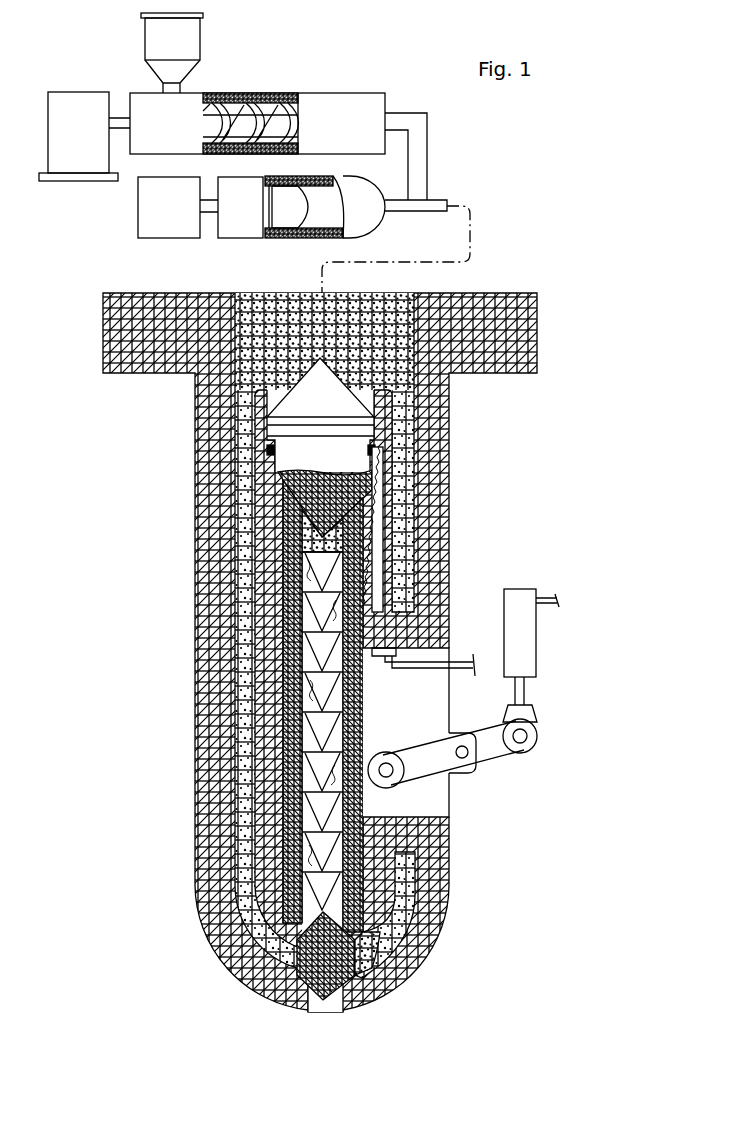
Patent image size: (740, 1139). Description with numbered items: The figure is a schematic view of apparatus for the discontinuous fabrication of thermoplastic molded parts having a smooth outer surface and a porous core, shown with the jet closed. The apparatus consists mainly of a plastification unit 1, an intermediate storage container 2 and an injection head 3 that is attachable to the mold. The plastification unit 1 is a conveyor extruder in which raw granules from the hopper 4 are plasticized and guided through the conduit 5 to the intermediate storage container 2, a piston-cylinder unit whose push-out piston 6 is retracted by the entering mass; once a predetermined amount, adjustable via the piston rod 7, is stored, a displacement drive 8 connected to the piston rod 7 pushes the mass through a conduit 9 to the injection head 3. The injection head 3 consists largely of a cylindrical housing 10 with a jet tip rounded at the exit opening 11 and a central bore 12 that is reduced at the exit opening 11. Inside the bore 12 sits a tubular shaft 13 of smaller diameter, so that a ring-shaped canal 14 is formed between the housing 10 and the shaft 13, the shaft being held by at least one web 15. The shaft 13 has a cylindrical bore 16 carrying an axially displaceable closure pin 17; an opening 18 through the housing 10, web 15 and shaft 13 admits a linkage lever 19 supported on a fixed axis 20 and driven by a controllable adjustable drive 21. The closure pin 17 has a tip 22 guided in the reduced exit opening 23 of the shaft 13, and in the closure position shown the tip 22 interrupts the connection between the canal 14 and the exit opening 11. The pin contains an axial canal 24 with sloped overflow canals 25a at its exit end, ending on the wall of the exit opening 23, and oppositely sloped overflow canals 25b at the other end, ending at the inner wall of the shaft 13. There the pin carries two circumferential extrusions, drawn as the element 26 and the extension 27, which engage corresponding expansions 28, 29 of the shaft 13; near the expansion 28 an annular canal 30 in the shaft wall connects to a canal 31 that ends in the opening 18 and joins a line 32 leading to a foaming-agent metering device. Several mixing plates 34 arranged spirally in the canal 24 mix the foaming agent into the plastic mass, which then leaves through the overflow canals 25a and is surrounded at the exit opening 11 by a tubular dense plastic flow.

The plastification unit 1 is at (331, 102).
The intermediate storage container 2 is at (332, 229).
The injection head 3 is at (335, 652).
The hopper 4 is at (185, 43).
The conduit 5 is at (421, 157).
The push-out piston 6 is at (288, 218).
The piston rod 7 is at (270, 212).
The displacement drive 8 is at (151, 213).
The conduit 9 is at (473, 243).
The cylindrical housing 10 is at (207, 680).
The exit opening 11 is at (318, 1001).
The central bore 12 is at (238, 810).
The tubular shaft 13 is at (272, 700).
The canal 14 is at (240, 725).
The web 15 is at (403, 628).
The cylindrical bore 16 is at (284, 753).
The closure pin 17 is at (294, 767).
The opening 18 is at (427, 710).
The linkage lever 19 is at (499, 746).
The axis 20 is at (466, 756).
The controllable adjustable drive 21 is at (519, 598).
The tip 22 is at (355, 952).
The reduced exit opening 23 is at (356, 931).
The axial canal 24 is at (318, 888).
The overflow canals 25a is at (360, 958).
The overflow canals 25b is at (285, 510).
The ram 26 is at (282, 483).
The extension 27 is at (272, 448).
The expansion 28 is at (280, 467).
The expansion 29 is at (250, 403).
The annular canal 30 is at (275, 444).
The canal 31 is at (382, 522).
The line 32 is at (462, 664).
The mixing plates 34 is at (322, 648).